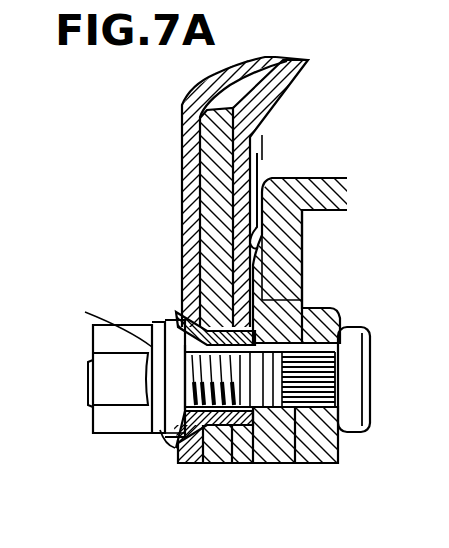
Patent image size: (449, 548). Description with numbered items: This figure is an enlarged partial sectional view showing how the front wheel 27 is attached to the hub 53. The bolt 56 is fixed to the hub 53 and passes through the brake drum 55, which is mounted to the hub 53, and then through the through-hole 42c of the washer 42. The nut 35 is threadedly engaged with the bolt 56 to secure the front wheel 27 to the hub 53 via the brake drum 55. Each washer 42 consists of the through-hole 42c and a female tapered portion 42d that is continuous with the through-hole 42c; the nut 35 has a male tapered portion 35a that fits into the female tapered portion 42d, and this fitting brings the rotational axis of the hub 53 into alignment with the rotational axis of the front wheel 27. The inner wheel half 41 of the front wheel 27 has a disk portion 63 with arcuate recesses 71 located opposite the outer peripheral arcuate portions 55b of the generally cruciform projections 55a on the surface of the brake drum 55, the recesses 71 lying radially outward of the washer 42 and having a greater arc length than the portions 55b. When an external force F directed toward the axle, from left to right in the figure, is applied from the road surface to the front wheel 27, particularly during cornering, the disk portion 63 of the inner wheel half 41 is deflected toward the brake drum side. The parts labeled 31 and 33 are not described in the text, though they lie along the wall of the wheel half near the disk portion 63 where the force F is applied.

The front wheel 27 is at (118, 102).
The outer shell 31 is at (205, 90).
The housing wall 33 is at (215, 197).
The inner wheel half 41 is at (304, 88).
The disk portion 63 is at (262, 135).
The arcuate recess 71 is at (263, 180).
The brake drum 55 is at (318, 176).
The projection 55a is at (296, 268).
The outer peripheral arcuate portion 55b is at (253, 278).
The hub 53 is at (322, 308).
The washer 42 is at (180, 305).
The through-hole 42c is at (172, 314).
The female tapered portion 42d is at (147, 434).
The nut 35 is at (113, 380).
The male tapered portion 35a is at (170, 435).
The bolt 56 is at (372, 378).
The external force F is at (178, 151).